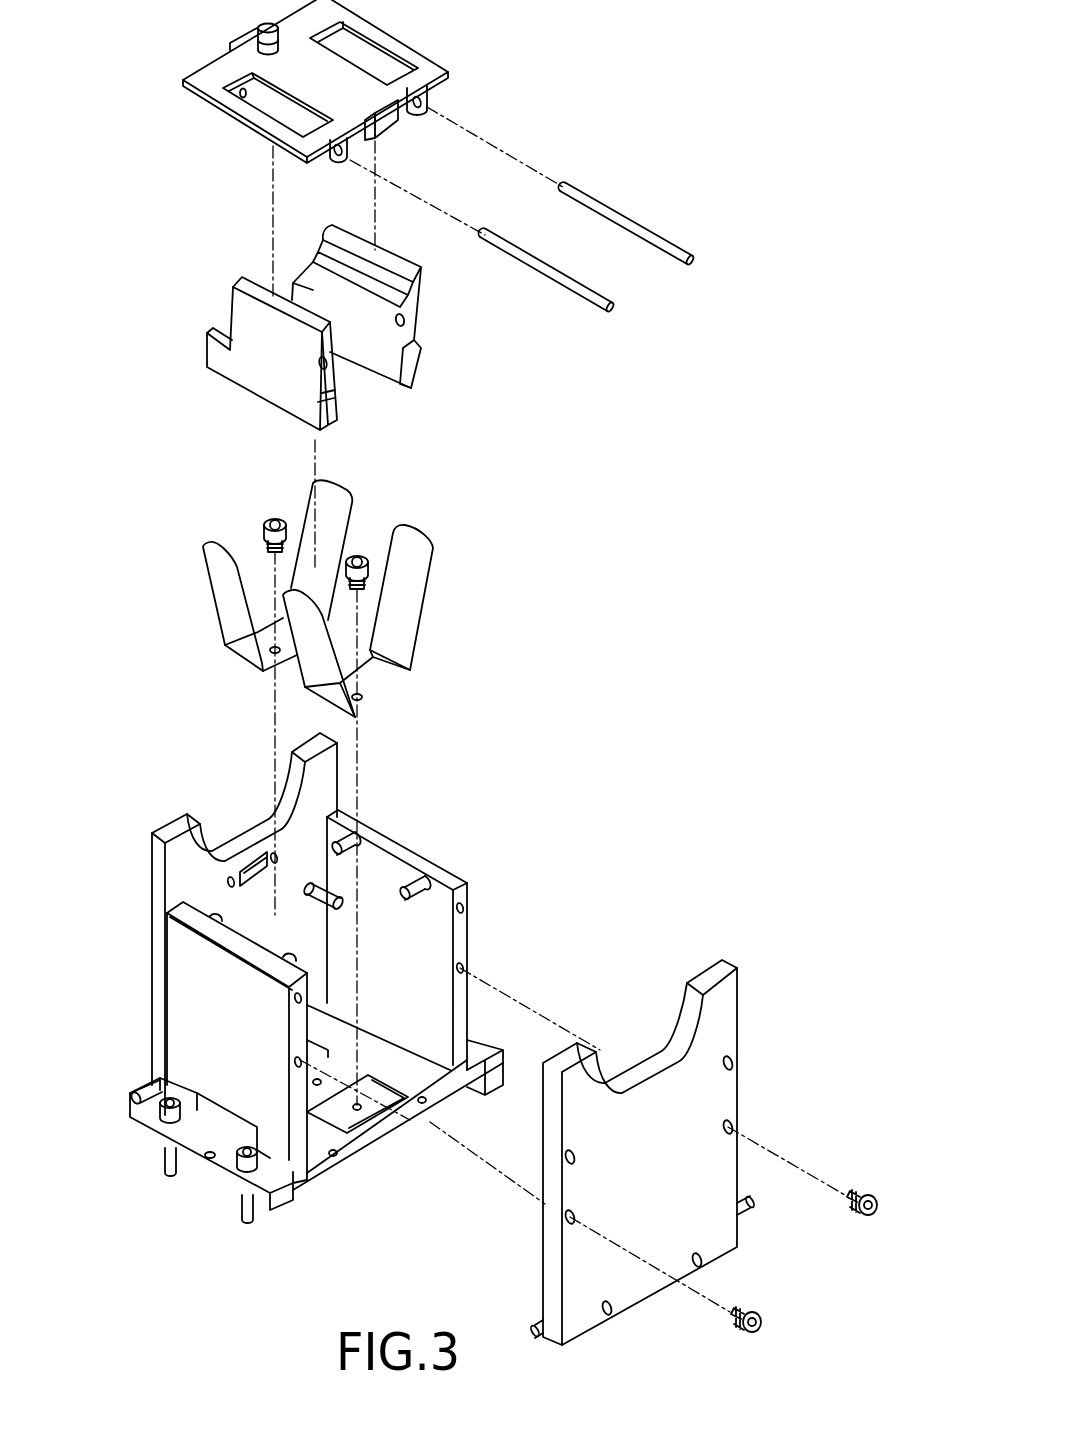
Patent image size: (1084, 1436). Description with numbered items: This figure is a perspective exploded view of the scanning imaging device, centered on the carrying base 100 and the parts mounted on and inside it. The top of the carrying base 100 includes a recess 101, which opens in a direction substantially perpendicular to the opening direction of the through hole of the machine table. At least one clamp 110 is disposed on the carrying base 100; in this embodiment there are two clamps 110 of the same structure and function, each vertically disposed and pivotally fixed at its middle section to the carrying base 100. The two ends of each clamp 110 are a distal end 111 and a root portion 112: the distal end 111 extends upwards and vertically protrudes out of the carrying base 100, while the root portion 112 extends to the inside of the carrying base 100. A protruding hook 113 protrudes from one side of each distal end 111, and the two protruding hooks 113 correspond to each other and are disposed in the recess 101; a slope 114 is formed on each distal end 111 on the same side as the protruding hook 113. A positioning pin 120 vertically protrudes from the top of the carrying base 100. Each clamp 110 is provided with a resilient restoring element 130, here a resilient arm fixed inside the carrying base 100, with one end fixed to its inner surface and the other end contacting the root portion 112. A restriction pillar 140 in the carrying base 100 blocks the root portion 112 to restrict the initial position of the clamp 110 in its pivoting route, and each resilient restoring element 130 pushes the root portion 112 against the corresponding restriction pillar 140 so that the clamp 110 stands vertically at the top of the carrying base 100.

The carrying base 100 is at (736, 113).
The recess 101 is at (225, 818).
The clamp 110 is at (370, 292).
The distal end 111 is at (397, 253).
The root portion 112 is at (377, 377).
The protruding hook 113 is at (340, 256).
The slope 114 is at (332, 232).
The positioning pin 120 is at (245, 35).
The resilient restoring element 130 is at (427, 613).
The restriction pillar 140 is at (330, 896).